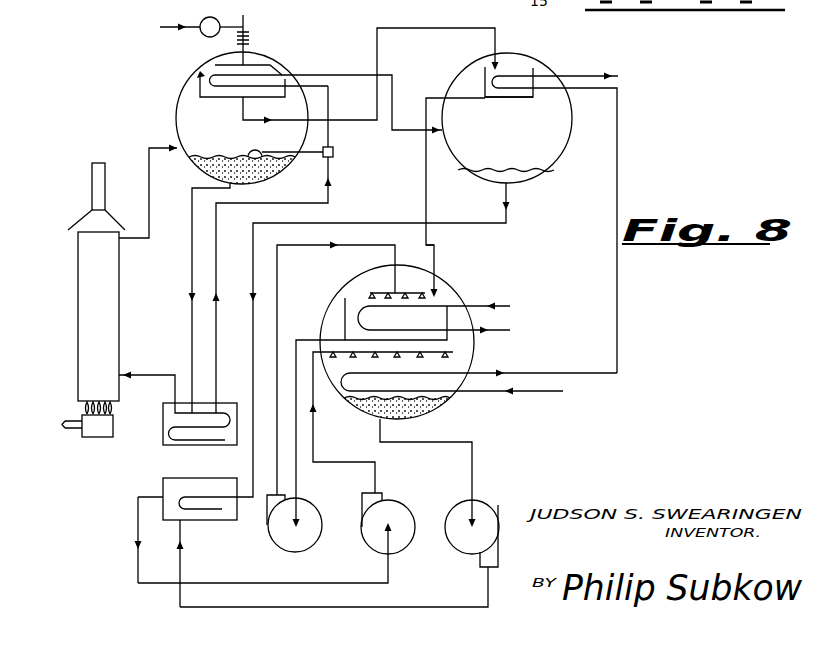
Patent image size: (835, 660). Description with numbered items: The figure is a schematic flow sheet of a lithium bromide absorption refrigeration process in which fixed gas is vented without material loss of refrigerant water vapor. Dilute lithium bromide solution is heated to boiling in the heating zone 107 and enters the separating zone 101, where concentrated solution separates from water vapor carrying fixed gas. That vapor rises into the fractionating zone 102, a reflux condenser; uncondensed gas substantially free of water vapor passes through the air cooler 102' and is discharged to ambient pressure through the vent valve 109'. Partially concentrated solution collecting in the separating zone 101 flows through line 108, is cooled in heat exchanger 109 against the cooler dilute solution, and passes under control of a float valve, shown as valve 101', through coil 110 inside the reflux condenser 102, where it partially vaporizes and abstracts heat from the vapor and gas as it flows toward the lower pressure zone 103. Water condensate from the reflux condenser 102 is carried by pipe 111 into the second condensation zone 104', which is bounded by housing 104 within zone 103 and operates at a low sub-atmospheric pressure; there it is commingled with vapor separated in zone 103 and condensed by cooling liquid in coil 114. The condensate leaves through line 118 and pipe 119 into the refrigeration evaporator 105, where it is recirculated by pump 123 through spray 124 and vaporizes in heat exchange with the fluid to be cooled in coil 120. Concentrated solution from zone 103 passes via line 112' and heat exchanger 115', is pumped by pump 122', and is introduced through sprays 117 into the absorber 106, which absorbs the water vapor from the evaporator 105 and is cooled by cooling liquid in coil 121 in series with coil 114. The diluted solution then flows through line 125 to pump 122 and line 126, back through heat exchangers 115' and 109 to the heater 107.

The separating zone 101 is at (249, 118).
The valve 101' is at (298, 244).
The fractionating zone (reflux condenser) 102 is at (207, 81).
The air cooler 102' is at (265, 40).
The lower pressure zone 103 is at (510, 148).
The housing in second vessel 104 is at (510, 61).
The second condensation zone (condenser section) 104' is at (510, 108).
The refrigeration evaporator 105 is at (345, 302).
The absorber 106 is at (479, 376).
The heating zone (heater) 107 is at (98, 322).
The line 108 is at (192, 258).
The heat exchanger 109 is at (178, 436).
The vent valve 109' is at (201, 18).
The coil 110 is at (278, 72).
The pipe 111 is at (348, 123).
The line 112' is at (400, 340).
The coil 114 is at (522, 70).
The heat exchanger 115' is at (178, 541).
The sprays 117 is at (448, 353).
The line 118 is at (425, 183).
The pipe 119 is at (437, 247).
The coil 120 is at (440, 305).
The cooling coil 121 is at (450, 393).
The pump 122 is at (479, 521).
The pump 122' is at (287, 538).
The pump 123 is at (288, 547).
The spray 124 is at (372, 292).
The line 125 is at (474, 452).
The line 126 is at (333, 608).